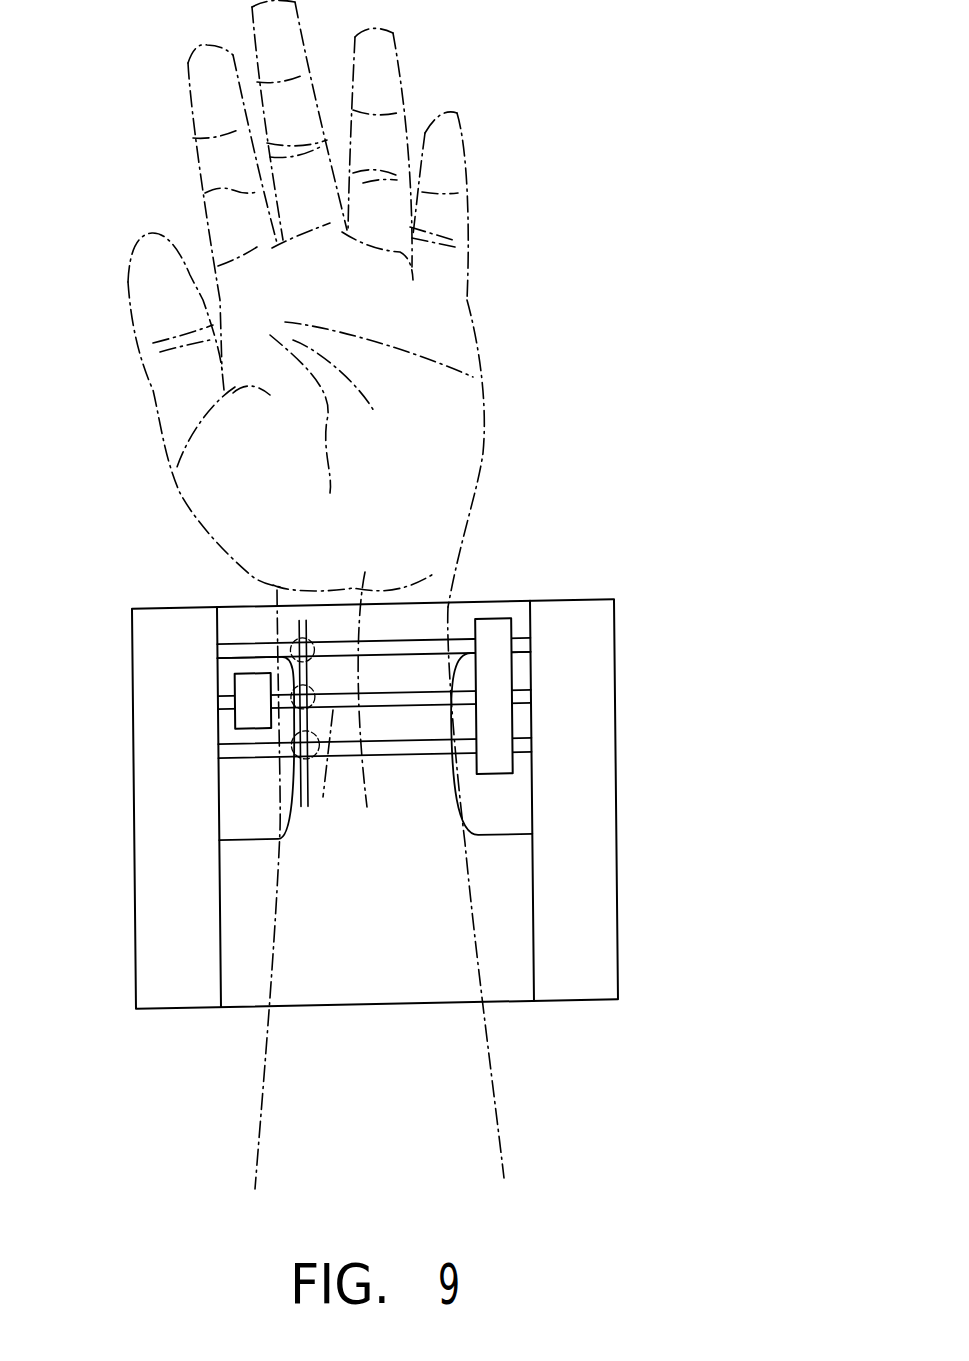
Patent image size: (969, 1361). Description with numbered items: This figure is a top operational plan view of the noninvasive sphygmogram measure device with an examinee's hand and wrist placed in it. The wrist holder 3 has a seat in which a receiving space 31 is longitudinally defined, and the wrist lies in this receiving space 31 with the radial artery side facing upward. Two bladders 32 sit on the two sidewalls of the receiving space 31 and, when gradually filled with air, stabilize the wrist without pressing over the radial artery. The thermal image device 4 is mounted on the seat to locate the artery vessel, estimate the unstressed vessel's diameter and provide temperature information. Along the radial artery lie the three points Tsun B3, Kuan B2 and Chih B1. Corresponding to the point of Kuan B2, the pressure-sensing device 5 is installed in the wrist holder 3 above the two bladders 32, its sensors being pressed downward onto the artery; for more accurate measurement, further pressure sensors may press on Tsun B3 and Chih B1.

The wrist holder 3 is at (387, 777).
The receiving space 31 is at (504, 912).
The bladders 32 is at (237, 803).
The thermal image device 4 is at (500, 668).
The pressure-sensing device 5 is at (248, 697).
The Chih B1 is at (340, 788).
The Kuan B2 is at (318, 688).
The Tsun B3 is at (337, 657).